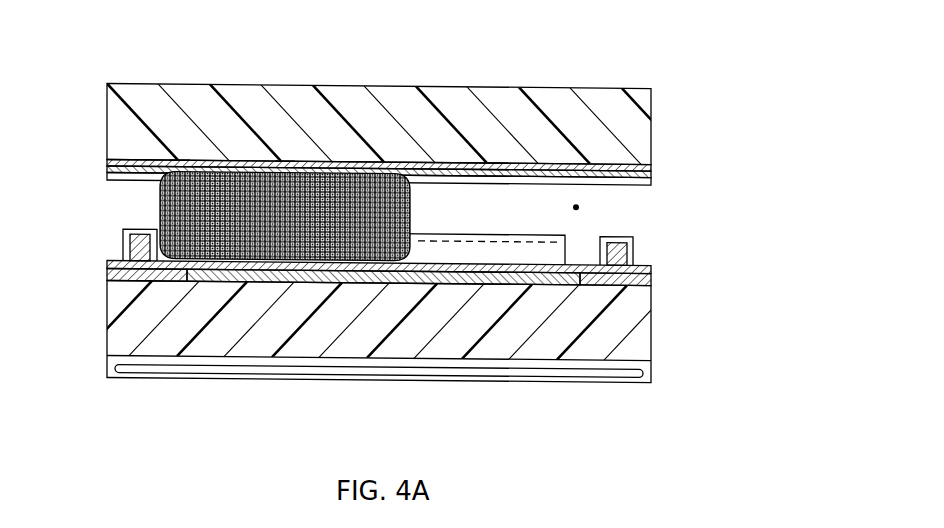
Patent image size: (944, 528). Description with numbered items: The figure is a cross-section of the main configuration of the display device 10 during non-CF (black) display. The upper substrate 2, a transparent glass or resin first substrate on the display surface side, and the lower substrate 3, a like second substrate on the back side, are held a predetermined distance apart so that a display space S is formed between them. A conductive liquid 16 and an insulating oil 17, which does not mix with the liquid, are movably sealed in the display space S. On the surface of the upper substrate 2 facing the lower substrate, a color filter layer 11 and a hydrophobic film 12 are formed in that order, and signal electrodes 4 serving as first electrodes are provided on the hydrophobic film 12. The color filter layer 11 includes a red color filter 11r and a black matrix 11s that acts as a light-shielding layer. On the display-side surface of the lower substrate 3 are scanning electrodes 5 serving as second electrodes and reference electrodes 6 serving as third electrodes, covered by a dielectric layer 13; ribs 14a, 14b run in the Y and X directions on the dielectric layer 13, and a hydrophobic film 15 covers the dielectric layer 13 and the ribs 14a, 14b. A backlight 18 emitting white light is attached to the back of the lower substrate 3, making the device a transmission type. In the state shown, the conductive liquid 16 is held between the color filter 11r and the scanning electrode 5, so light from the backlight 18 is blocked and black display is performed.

The upper substrate 2 is at (120, 117).
The lower substrate 3 is at (118, 320).
The signal electrodes 4 is at (651, 179).
The scanning electrodes 5 is at (278, 282).
The reference electrodes 6 is at (488, 282).
The display device 10 is at (636, 70).
The color filter layer 11 is at (414, 158).
The red color filter 11r is at (285, 158).
The black matrix 11s is at (180, 158).
The hydrophobic film 12 is at (651, 168).
The dielectric layer 13 is at (651, 282).
The rib 14a is at (122, 247).
The rib 14b is at (431, 252).
The hydrophobic film 15 is at (137, 234).
The conductive liquid 16 is at (170, 203).
The insulating oil 17 is at (453, 201).
The backlight 18 is at (195, 373).
The display space S is at (576, 200).